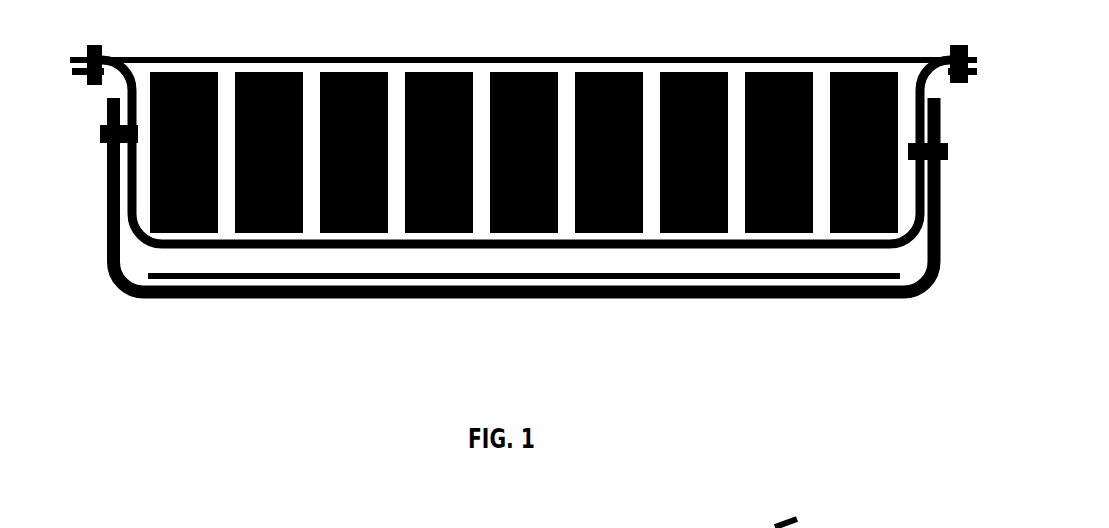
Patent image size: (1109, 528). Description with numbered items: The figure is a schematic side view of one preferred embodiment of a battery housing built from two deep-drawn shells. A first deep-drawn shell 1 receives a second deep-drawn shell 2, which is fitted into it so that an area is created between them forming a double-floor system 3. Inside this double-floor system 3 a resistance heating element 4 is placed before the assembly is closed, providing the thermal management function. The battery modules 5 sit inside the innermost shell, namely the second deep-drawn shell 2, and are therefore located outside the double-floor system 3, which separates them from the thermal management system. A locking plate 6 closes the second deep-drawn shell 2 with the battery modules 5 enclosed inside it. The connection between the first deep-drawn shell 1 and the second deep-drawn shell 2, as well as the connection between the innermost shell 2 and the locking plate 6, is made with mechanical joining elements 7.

The first deep-drawn shell 1 is at (373, 298).
The second deep-drawn shell 2 is at (142, 244).
The double-floor system 3 is at (722, 258).
The resistance heating element 4 is at (605, 272).
The battery modules 5 is at (693, 72).
The locking plate 6 is at (440, 58).
The mechanical joining elements 7 is at (95, 46).